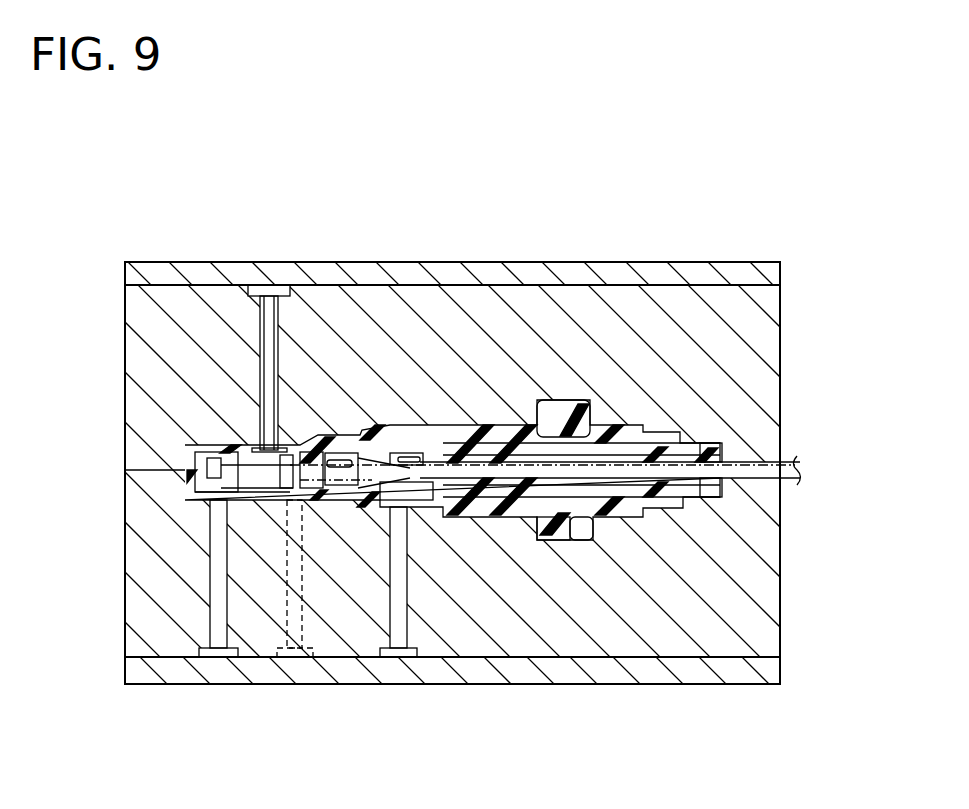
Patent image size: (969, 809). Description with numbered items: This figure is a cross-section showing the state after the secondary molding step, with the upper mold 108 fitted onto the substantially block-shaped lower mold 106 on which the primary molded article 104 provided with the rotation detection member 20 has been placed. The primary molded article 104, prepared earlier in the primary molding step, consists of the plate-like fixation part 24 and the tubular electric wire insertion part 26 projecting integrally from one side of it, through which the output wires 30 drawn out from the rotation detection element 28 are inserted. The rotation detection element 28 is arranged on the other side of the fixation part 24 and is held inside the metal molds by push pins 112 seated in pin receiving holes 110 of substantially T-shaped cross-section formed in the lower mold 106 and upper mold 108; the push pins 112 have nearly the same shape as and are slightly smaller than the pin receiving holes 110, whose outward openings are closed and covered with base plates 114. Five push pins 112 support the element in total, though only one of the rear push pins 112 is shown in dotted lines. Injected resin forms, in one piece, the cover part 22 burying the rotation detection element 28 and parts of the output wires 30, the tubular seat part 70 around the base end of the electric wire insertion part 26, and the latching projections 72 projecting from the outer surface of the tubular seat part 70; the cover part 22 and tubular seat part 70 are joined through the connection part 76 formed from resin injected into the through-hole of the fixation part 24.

The rotation detection member 20 is at (478, 378).
The cover part 22 is at (441, 430).
The fixation part 24 is at (576, 380).
The electric wire insertion part 26 is at (703, 460).
The rotation detection element 28 is at (358, 422).
The output wires 30 is at (790, 466).
The tubular seat part 70 is at (623, 423).
The latching projections 72 is at (696, 450).
The connection part 76 is at (540, 500).
The primary molded article 104 is at (565, 408).
The lower mold 106 is at (762, 582).
The upper mold 108 is at (763, 418).
The pin receiving holes 110 is at (263, 340).
The push pins 112 is at (268, 363).
The base plates 114 is at (690, 275).